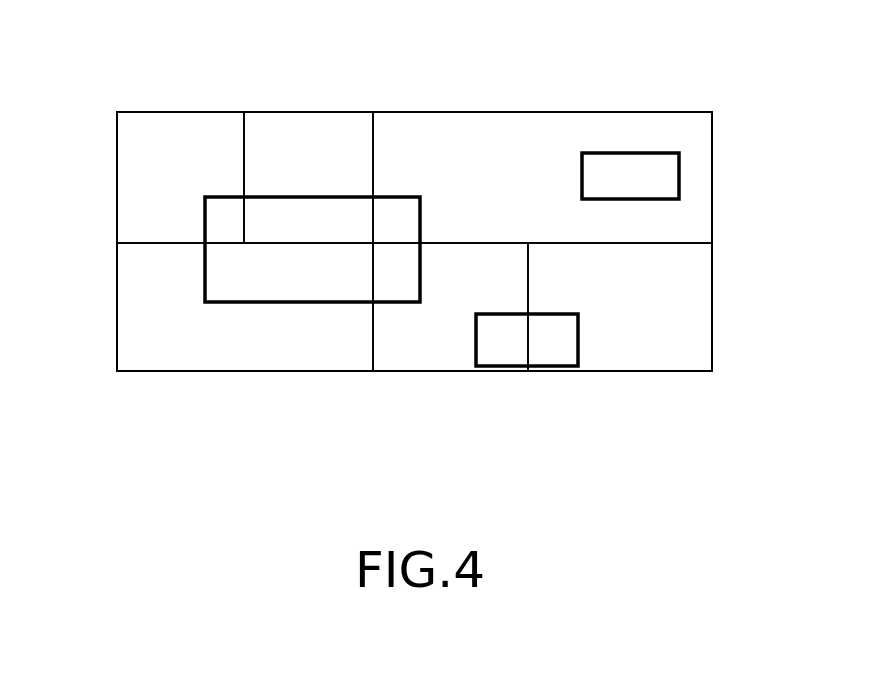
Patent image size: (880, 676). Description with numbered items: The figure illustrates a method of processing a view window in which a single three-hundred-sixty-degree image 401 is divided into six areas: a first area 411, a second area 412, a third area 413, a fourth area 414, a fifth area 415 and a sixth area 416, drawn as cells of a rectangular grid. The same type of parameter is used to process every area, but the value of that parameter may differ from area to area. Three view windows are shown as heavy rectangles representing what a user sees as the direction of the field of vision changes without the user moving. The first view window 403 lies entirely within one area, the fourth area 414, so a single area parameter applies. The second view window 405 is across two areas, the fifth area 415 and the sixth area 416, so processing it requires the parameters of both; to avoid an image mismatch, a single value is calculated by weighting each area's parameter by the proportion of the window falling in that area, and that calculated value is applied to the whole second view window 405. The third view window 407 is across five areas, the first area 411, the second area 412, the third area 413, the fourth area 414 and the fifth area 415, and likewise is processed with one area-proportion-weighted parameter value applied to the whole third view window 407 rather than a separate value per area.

The 360-degree image 401 is at (422, 110).
The area 1 411 is at (158, 321).
The area 2 412 is at (172, 155).
The area 3 413 is at (312, 155).
The area 4 414 is at (548, 160).
The area 5 415 is at (452, 322).
The area 6 416 is at (632, 308).
The view window 1 403 is at (635, 153).
The view window 2 405 is at (579, 347).
The view window 3 407 is at (240, 303).